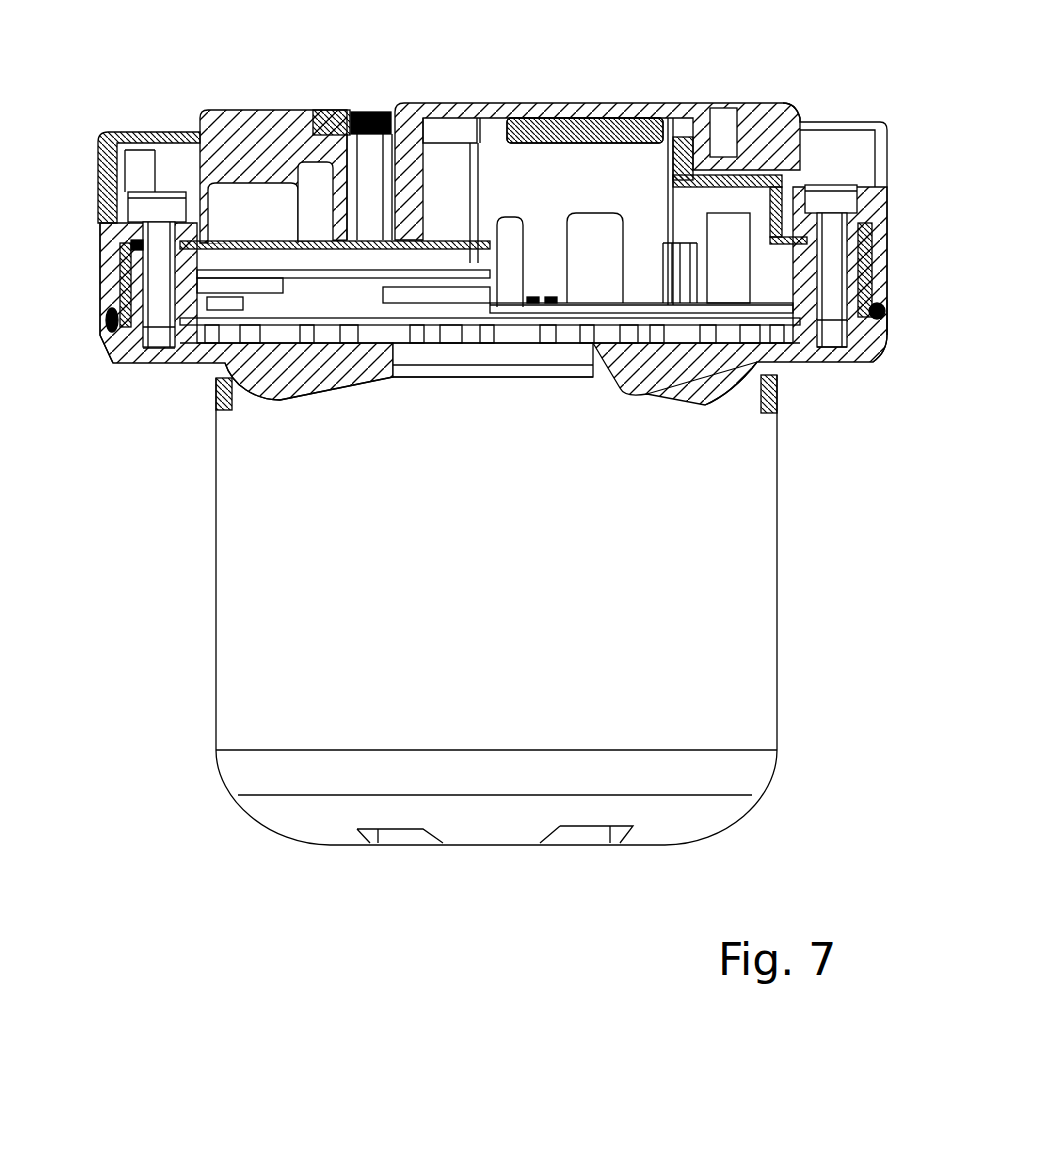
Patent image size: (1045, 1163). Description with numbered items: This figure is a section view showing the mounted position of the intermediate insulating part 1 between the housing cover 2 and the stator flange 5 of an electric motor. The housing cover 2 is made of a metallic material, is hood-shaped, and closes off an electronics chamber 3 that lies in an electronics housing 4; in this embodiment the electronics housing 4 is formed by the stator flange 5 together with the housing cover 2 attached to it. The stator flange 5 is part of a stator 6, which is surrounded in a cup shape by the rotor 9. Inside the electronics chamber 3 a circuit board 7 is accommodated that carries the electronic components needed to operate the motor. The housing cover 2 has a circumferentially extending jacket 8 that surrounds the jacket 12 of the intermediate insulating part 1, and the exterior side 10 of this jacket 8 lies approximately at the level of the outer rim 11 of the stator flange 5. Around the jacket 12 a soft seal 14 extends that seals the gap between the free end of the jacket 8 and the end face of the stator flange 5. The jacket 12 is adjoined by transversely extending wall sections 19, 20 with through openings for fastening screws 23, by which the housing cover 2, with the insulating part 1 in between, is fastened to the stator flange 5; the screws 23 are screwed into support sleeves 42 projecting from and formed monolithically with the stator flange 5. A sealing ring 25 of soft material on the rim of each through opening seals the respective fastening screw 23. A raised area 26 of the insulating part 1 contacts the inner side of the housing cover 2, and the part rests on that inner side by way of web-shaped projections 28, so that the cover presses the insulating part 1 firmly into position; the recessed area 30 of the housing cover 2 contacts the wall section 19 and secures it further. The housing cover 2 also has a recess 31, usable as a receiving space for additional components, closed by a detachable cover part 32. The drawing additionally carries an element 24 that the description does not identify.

The intermediate insulating part 1 is at (105, 300).
The housing cover 2 is at (233, 127).
The electronics chamber 3 is at (614, 190).
The electronics housing 4 is at (800, 217).
The stator flange 5 is at (130, 355).
The stator 6 is at (313, 380).
The circuit board 7 is at (385, 308).
The jacket 8 is at (112, 276).
The rotor 9 is at (748, 608).
The exterior side 10 is at (888, 250).
The outer rim 11 is at (878, 318).
The jacket 12 is at (870, 288).
The soft seal 14 is at (110, 333).
The wall section 19 is at (232, 238).
The wall section 20 is at (807, 183).
The fastening screws 23 is at (162, 305).
The skirt 24 is at (225, 370).
The sealing ring 25 is at (137, 235).
The raised area 26 is at (577, 123).
The projection 28 is at (528, 128).
The recessed area 30 is at (427, 125).
The recess 31 is at (175, 177).
The cover part 32 is at (120, 132).
The support sleeves 42 is at (122, 352).